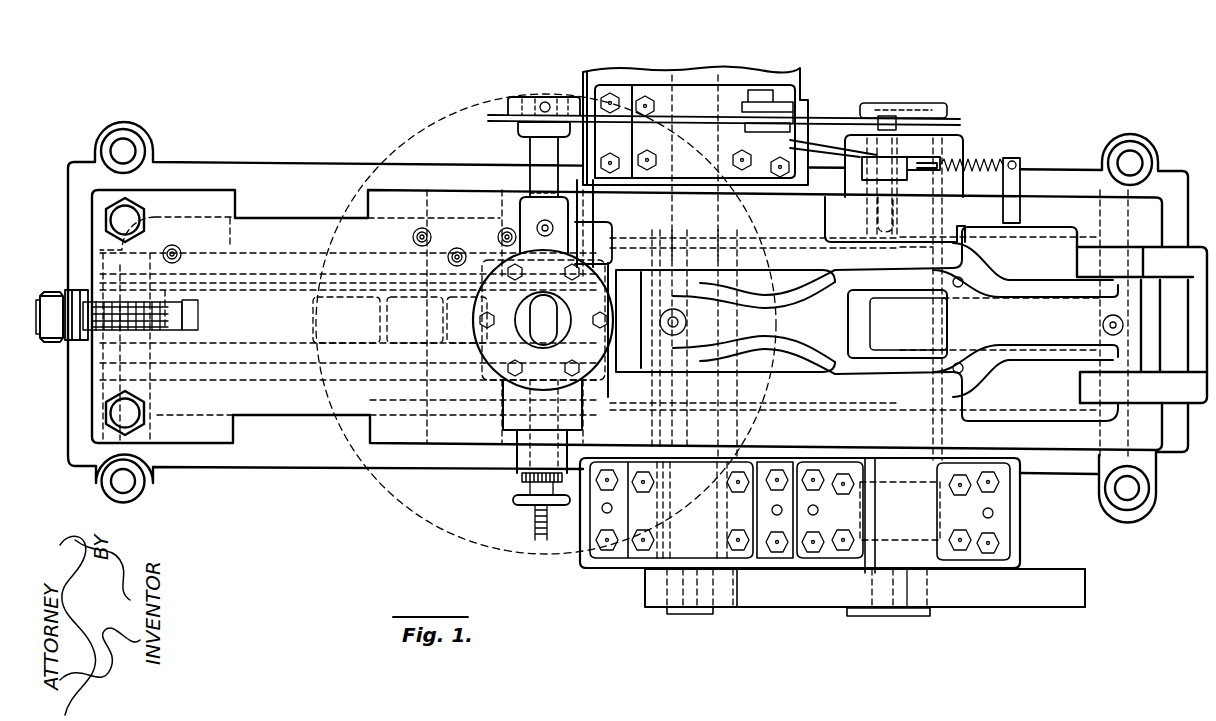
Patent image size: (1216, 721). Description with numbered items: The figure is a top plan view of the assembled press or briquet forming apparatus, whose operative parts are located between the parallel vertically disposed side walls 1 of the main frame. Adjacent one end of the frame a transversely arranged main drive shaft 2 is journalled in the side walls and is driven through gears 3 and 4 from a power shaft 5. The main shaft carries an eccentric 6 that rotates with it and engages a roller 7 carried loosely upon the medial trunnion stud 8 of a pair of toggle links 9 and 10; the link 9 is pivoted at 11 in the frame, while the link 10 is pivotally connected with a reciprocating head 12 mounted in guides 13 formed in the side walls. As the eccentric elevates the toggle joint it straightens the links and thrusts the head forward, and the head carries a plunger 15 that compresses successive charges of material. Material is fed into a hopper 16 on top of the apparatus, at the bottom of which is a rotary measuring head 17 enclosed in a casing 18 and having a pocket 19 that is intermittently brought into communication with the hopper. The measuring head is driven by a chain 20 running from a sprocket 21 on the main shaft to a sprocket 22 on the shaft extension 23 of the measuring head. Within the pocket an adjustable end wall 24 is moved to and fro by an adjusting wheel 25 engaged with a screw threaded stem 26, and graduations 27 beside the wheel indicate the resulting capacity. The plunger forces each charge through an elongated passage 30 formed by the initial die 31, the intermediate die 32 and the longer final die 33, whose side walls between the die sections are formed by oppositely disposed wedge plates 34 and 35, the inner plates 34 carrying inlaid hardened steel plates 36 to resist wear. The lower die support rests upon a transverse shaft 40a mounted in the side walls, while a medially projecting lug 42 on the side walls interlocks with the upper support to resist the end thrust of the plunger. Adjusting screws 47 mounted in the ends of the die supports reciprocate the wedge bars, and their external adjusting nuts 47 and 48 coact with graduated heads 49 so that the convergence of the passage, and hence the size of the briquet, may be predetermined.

The side walls 1 is at (295, 455).
The main drive shaft 2 is at (873, 583).
The gear 3 is at (1080, 592).
The gear 4 is at (650, 590).
The power shaft 5 is at (672, 613).
The eccentric 6 is at (1015, 323).
The roller 7 is at (863, 321).
The medial trunnion stud 8 is at (913, 324).
The toggle link 9 is at (1037, 353).
The toggle link 10 is at (737, 294).
The pivot 11 is at (1098, 257).
The reciprocating head 12 is at (854, 345).
The guides 13 is at (840, 242).
The plunger 15 is at (590, 248).
The hopper 16 is at (425, 130).
The rotary measuring head 17 is at (521, 318).
The casing 18 is at (507, 390).
The pocket 19 is at (548, 330).
The driving chain 20 is at (691, 114).
The sprocket 21 is at (955, 120).
The sprocket 22 is at (493, 114).
The shaft extension 23 is at (540, 150).
The adjustable end wall 24 is at (510, 413).
The adjusting wheel 25 is at (513, 499).
The screw threaded stem 26 is at (533, 513).
The graduations 27 is at (520, 478).
The elongated passage 30 is at (232, 312).
The initial die 31 is at (467, 320).
The intermediate die 32 is at (415, 320).
The final die 33 is at (346, 320).
The wedge plates 34 is at (402, 353).
The wedge plates 35 is at (207, 365).
The hardened steel plates 36 is at (287, 350).
The transverse shaft 40a is at (427, 432).
The lug 42 is at (301, 430).
The adjusting screw 47 is at (38, 298).
The adjusting nut 48 is at (51, 340).
The graduated head 49 is at (69, 287).